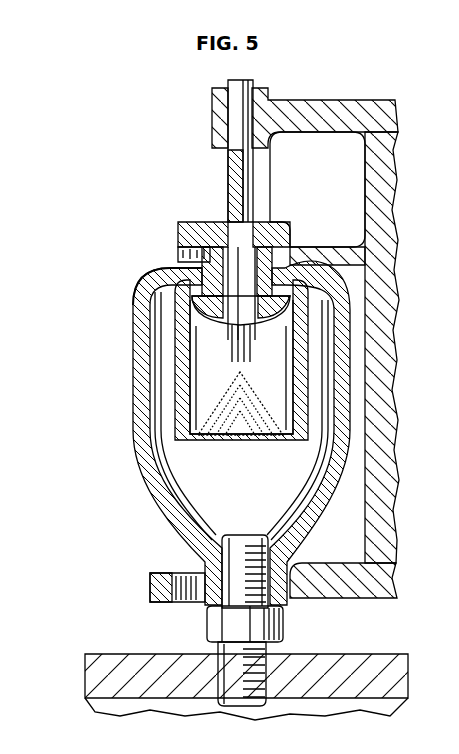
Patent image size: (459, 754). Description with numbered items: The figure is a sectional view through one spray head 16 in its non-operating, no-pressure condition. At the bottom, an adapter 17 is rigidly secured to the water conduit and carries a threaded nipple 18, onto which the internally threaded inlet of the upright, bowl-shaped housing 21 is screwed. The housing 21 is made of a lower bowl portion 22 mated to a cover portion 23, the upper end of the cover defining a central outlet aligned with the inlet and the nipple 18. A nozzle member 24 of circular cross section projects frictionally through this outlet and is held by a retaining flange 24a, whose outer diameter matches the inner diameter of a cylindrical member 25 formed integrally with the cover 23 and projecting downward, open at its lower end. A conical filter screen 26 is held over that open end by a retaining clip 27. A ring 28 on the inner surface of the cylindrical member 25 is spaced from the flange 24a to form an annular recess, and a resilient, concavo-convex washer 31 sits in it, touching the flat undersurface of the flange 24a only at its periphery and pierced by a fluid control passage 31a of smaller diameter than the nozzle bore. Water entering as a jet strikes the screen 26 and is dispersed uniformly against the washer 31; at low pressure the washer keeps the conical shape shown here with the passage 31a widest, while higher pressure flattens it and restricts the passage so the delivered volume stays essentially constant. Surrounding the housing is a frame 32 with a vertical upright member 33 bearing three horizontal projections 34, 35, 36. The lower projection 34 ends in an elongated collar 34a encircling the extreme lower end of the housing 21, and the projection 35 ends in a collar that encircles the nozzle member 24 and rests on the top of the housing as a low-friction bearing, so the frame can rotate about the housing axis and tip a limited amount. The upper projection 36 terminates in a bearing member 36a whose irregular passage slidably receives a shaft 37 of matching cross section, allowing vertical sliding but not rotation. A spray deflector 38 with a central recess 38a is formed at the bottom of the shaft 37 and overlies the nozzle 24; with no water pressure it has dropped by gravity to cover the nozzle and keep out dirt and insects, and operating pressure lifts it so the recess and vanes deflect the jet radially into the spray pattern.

The spray head 16 is at (212, 416).
The adapter 17 is at (207, 633).
The threaded nipple 18 is at (232, 580).
The housing 21 is at (131, 413).
The lower bowl portion 22 is at (216, 433).
The cover portion 23 is at (191, 381).
The nozzle member 24 is at (205, 265).
The retaining flange 24a is at (180, 272).
The cylindrical member 25 is at (176, 378).
The conical filter screen 26 is at (218, 436).
The retaining clip 27 is at (180, 440).
The ring 28 is at (194, 352).
The resilient washer 31 is at (190, 311).
The fluid control passage 31a is at (243, 325).
The frame 32 is at (344, 353).
The upright member 33 is at (394, 395).
The projection 34 is at (331, 600).
The collar 34a is at (159, 575).
The projection 35 is at (320, 247).
The projection 36 is at (306, 108).
The bearing member 36a is at (211, 108).
The shaft 37 is at (230, 167).
The spray deflector 38 is at (282, 214).
The central recess 38a is at (182, 239).